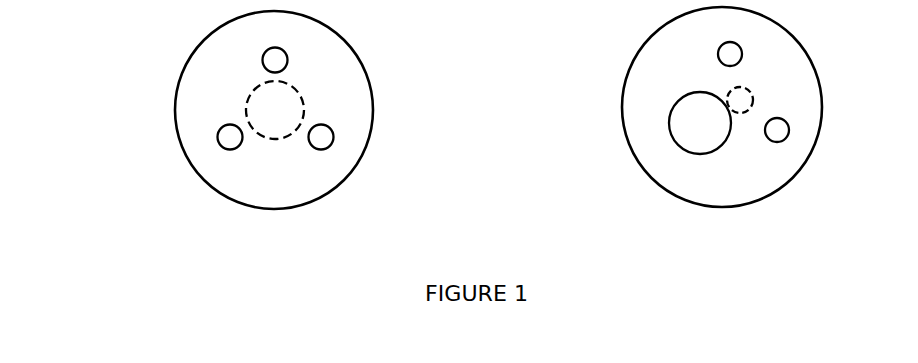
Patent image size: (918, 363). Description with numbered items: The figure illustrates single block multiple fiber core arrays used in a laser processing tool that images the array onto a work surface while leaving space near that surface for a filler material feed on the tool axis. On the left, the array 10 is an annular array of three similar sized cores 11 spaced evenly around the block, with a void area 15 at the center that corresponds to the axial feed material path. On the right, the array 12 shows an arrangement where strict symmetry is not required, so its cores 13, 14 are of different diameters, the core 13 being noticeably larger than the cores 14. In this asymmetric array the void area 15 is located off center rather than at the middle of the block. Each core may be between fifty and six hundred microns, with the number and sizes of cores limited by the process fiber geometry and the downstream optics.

The array 10 is at (140, 138).
The cores 11 is at (216, 154).
The array 12 is at (604, 125).
The core 13 is at (678, 156).
The core 14 is at (707, 41).
The void area 15 is at (310, 97).